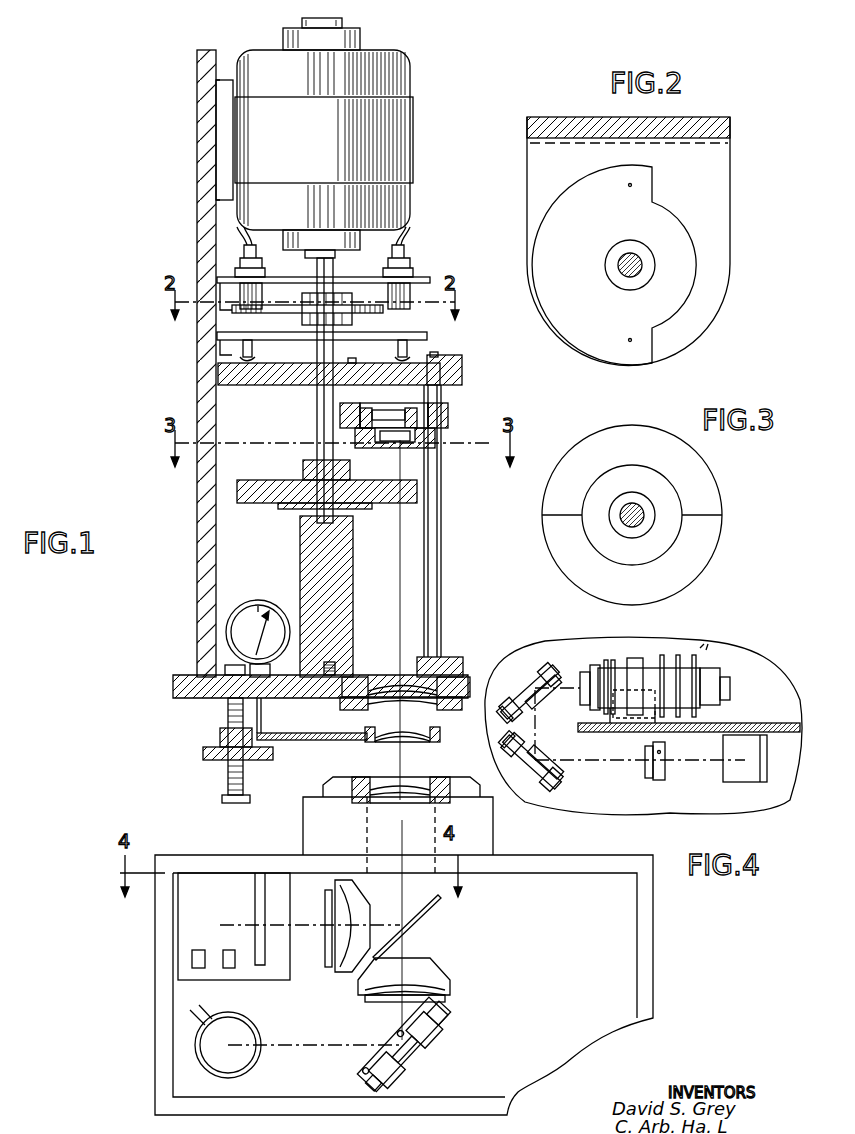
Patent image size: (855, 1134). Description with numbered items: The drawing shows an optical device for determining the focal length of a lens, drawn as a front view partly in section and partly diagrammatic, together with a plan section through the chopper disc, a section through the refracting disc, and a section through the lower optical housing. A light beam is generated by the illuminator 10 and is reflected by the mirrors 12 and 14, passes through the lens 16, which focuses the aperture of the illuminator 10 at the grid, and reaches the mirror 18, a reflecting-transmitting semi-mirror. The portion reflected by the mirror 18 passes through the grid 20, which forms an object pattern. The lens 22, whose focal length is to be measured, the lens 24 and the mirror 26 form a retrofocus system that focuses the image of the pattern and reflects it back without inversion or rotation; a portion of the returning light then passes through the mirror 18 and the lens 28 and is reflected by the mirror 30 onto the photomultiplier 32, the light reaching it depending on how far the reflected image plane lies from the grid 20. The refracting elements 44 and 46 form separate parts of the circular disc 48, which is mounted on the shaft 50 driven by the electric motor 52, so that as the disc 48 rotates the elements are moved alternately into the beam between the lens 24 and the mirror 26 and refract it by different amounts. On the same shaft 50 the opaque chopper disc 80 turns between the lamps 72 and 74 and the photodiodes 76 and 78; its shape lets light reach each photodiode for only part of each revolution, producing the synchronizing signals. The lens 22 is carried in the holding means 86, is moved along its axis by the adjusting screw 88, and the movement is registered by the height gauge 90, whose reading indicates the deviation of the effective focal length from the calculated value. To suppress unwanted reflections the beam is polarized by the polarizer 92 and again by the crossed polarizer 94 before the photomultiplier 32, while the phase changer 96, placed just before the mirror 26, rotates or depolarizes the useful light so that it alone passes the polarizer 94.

In FIG. 1, the illuminator 10 is at (635, 665).
In FIG. 1, the mirror 12 is at (515, 690).
In FIG. 1, the mirror 14 is at (533, 776).
In FIG. 4, the mirror 14 is at (222, 885).
In FIG. 1, the lens 16 is at (657, 772).
In FIG. 4, the lens 16 is at (352, 905).
In FIG. 1, the mirror 18 is at (748, 770).
In FIG. 4, the mirror 18 is at (428, 908).
In FIG. 1, the grid 20 is at (408, 799).
In FIG. 1, the lens 22 is at (405, 729).
In FIG. 1, the lens 24 is at (395, 688).
In FIG. 1, the mirror 26 is at (440, 417).
In FIG. 4, the lens 28 is at (398, 979).
In FIG. 4, the mirror 30 is at (387, 1053).
In FIG. 4, the photomultiplier 32 is at (255, 1035).
In FIG. 1, the refracting element 44 is at (383, 503).
In FIG. 3, the refracting element 44 is at (705, 492).
In FIG. 1, the refracting element 46 is at (268, 503).
In FIG. 3, the refracting element 46 is at (703, 540).
In FIG. 1, the circular disc 48 is at (323, 493).
In FIG. 3, the circular disc 48 is at (646, 518).
In FIG. 1, the shaft 50 is at (317, 413).
In FIG. 2, the shaft 50 is at (640, 268).
In FIG. 3, the shaft 50 is at (634, 504).
In FIG. 1, the electric motor 52 is at (400, 200).
In FIG. 1, the lamp 72 is at (238, 262).
In FIG. 1, the lamp 74 is at (406, 254).
In FIG. 1, the photodiode 76 is at (254, 348).
In FIG. 1, the photodiode 78 is at (408, 352).
In FIG. 1, the opaque chopper disc 80 is at (384, 309).
In FIG. 2, the opaque chopper disc 80 is at (578, 190).
In FIG. 1, the holding means 86 is at (367, 740).
In FIG. 1, the adjusting screw 88 is at (228, 782).
In FIG. 1, the height gauge 90 is at (279, 604).
In FIG. 4, the polarizer 92 is at (328, 940).
In FIG. 4, the polarizer 94 is at (370, 998).
In FIG. 1, the phase changer 96 is at (393, 443).